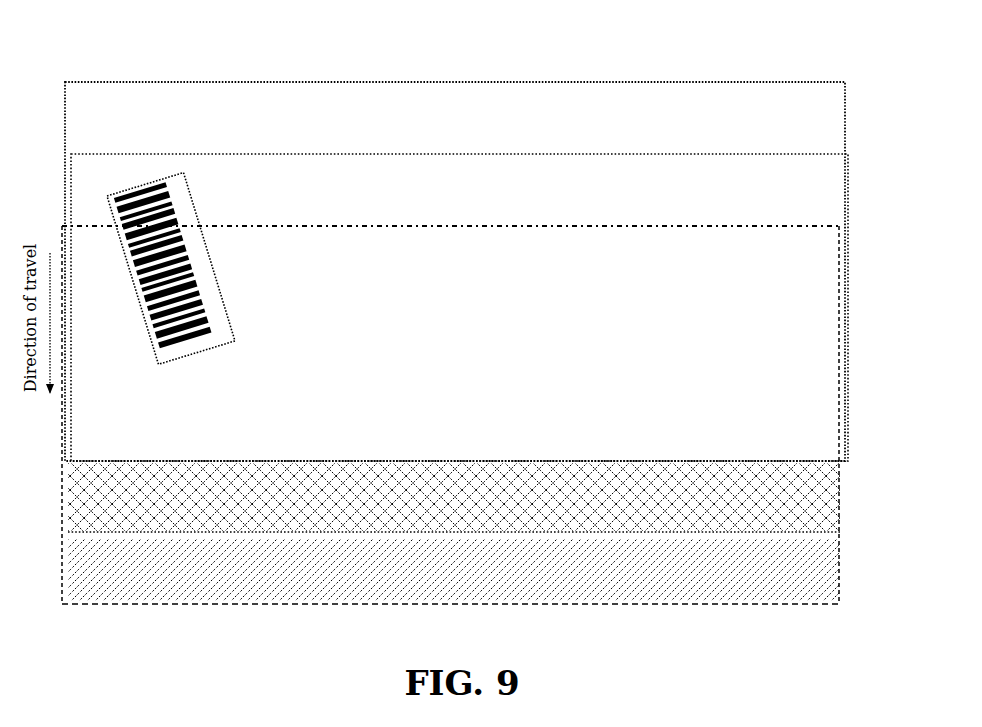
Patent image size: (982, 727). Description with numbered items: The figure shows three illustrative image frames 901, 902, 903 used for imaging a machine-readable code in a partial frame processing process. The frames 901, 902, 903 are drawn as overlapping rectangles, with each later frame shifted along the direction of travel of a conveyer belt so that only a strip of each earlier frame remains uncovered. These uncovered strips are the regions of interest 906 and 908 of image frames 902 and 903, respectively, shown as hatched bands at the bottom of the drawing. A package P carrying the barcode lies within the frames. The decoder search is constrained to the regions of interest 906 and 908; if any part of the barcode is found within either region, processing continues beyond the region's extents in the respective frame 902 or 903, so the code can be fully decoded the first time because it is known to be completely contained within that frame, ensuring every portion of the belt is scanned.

The image frame 901 is at (392, 82).
The image frame 902 is at (392, 154).
The image frame 903 is at (392, 226).
The package P is at (180, 286).
The region of interest 906 is at (842, 500).
The region of interest 908 is at (842, 566).